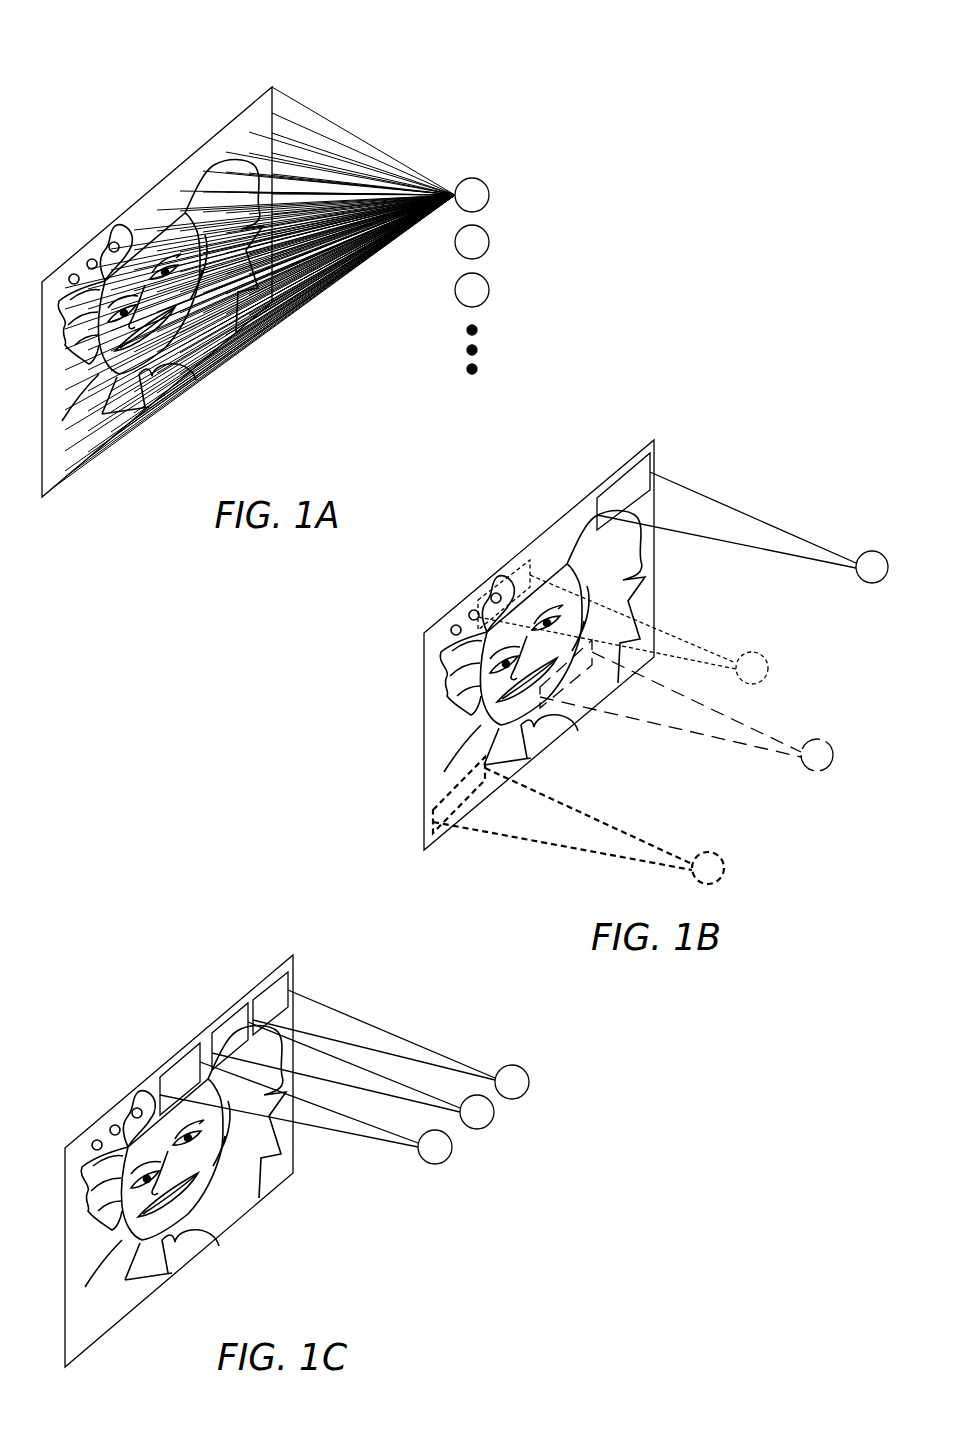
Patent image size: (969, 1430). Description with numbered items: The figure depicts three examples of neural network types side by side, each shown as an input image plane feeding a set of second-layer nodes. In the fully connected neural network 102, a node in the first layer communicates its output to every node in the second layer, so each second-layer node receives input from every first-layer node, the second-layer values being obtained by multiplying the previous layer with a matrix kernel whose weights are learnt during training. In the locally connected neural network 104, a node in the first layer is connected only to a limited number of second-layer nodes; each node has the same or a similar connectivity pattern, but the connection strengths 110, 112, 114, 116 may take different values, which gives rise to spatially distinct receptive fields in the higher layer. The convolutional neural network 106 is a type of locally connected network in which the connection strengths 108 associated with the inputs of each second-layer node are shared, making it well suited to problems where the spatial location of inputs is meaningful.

In FIG. 1A, the fully connected neural network 102 is at (257, 52).
In FIG. 1B, the locally connected neural network 104 is at (650, 405).
In FIG. 1C, the convolutional neural network 106 is at (145, 958).
In FIG. 1C, the shared connection strengths 108 is at (360, 1136).
In FIG. 1B, the connection strength 110 is at (815, 540).
In FIG. 1B, the connection strength 112 is at (694, 642).
In FIG. 1B, the connection strength 114 is at (768, 733).
In FIG. 1B, the connection strength 116 is at (655, 846).